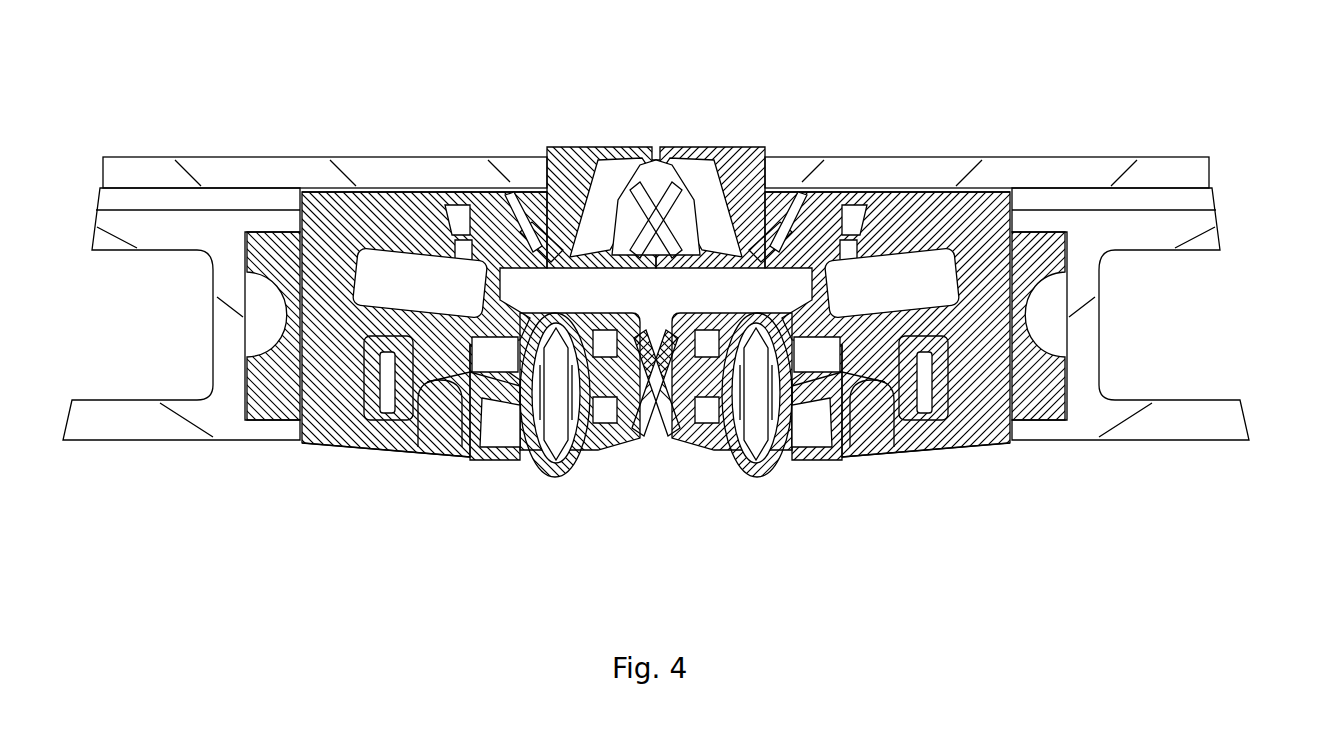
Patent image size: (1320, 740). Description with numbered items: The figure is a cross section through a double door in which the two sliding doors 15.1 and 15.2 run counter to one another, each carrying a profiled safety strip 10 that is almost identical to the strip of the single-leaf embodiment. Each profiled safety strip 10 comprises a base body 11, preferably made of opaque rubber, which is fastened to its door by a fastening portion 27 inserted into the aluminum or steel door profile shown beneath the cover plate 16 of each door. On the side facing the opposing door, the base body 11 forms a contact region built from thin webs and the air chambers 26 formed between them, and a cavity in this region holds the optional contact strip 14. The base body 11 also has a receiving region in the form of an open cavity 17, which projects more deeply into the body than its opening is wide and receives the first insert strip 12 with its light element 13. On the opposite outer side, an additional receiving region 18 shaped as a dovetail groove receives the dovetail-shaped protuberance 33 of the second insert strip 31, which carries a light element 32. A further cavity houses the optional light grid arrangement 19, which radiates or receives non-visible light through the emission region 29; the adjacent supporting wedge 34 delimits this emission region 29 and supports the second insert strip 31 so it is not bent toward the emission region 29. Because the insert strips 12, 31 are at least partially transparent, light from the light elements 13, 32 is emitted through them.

The profiled safety strip 10 is at (333, 457).
The base body 11 is at (323, 212).
The first insert strip 12 is at (408, 428).
The light element 13 is at (390, 383).
The contact strip 14 is at (553, 427).
The sliding door 15.1 is at (1133, 237).
The sliding door 15.2 is at (207, 418).
The cover plate 16 is at (268, 180).
The open cavity 17 is at (427, 382).
The additional receiving region 18 is at (428, 210).
The light grid arrangement 19 is at (388, 283).
The air chambers 26 is at (503, 445).
The fastening portion 27 is at (1057, 385).
The emission region 29 is at (570, 297).
The second insert strip 31 is at (572, 175).
The light element 32 is at (528, 232).
The dovetail-shaped protuberance 33 is at (463, 207).
The supporting wedge 34 is at (510, 250).